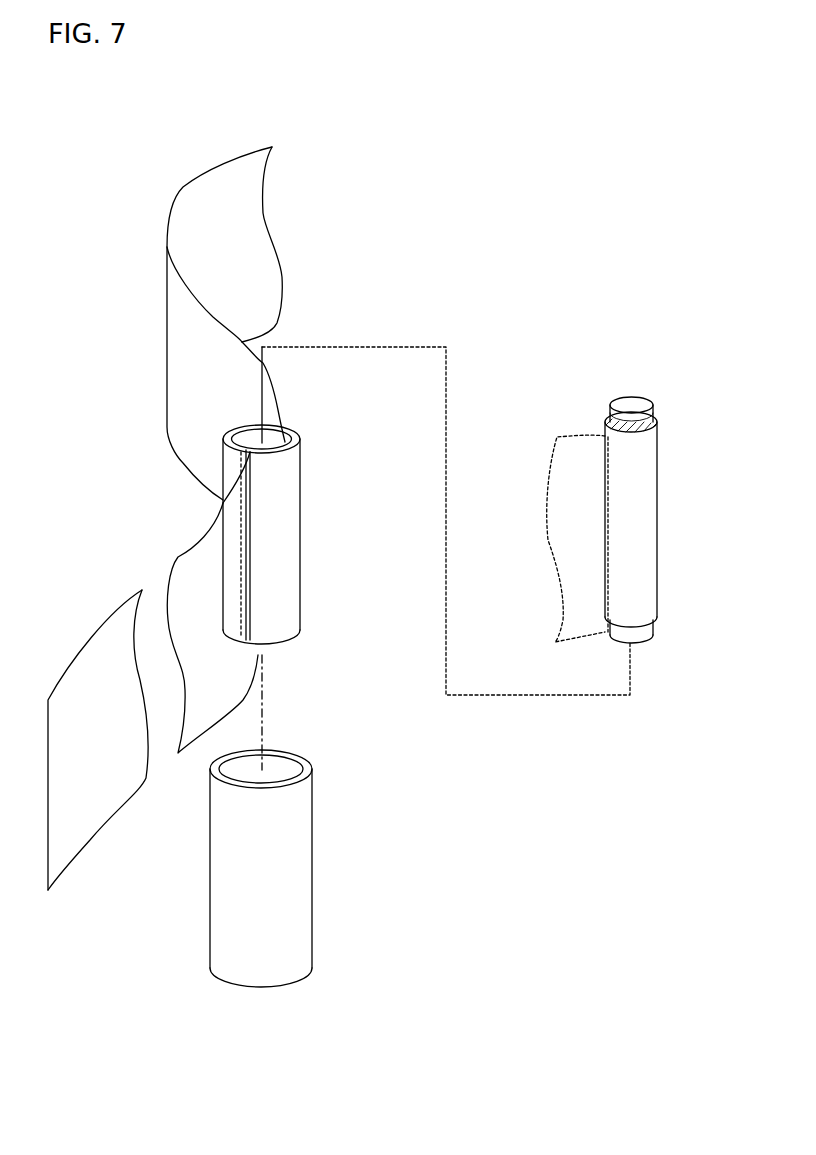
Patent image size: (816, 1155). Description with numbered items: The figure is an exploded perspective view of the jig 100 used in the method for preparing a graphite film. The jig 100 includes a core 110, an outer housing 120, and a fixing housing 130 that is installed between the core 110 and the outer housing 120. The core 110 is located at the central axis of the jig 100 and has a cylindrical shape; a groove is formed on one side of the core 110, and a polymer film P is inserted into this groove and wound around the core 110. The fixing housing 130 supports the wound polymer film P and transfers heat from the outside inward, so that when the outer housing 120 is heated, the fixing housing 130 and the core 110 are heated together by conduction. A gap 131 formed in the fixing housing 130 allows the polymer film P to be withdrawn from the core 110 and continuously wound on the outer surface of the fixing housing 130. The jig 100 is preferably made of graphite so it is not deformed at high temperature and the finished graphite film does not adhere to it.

The jig 100 is at (555, 195).
The core 110 is at (635, 402).
The outer housing 120 is at (287, 860).
The fixing housing 130 is at (287, 520).
The gap 131 is at (225, 507).
The polymer film P is at (180, 345).